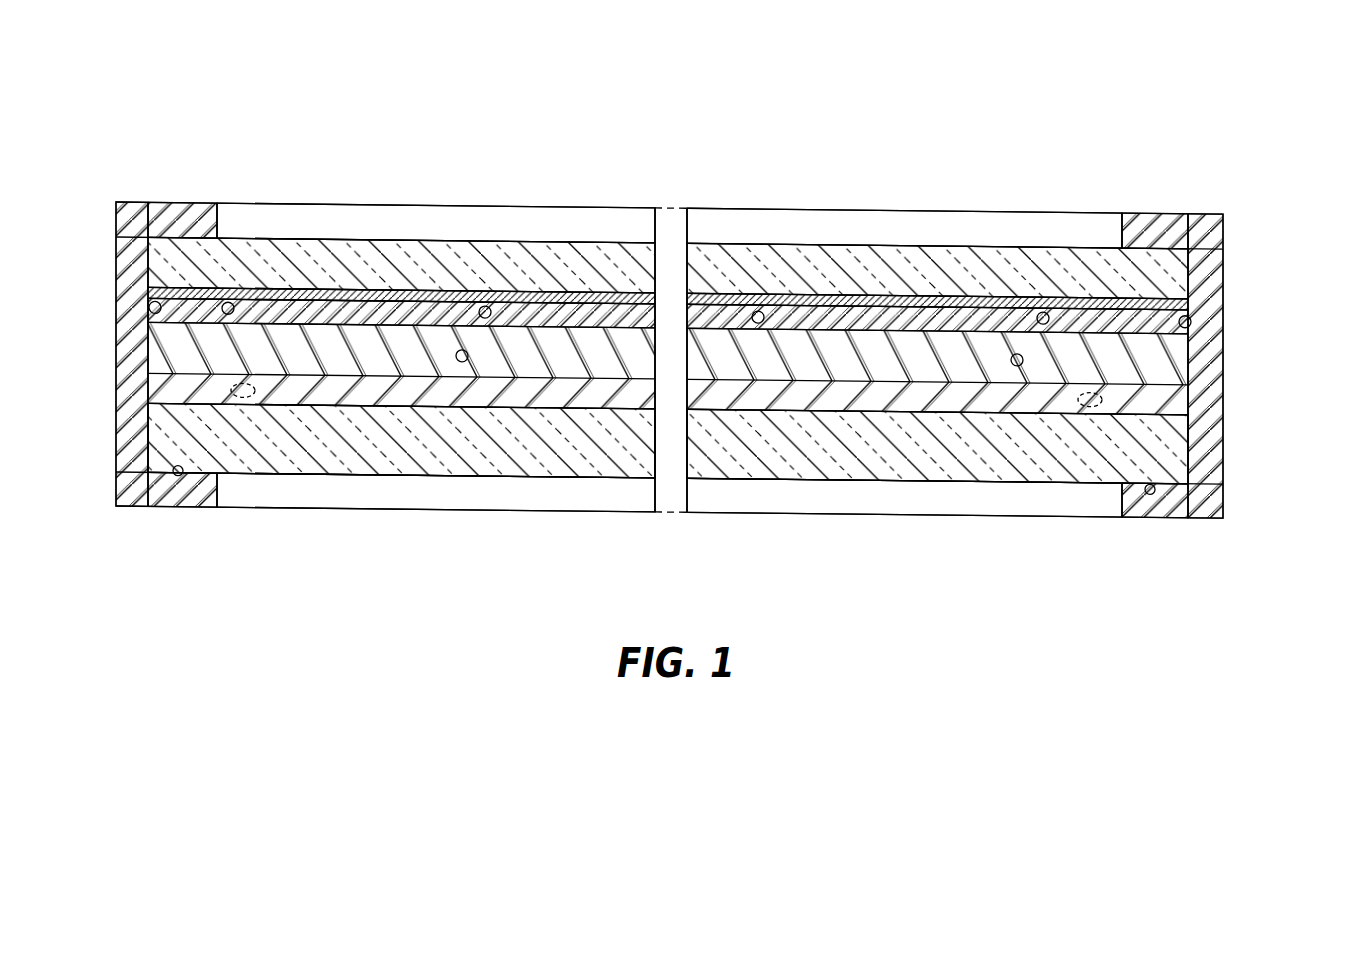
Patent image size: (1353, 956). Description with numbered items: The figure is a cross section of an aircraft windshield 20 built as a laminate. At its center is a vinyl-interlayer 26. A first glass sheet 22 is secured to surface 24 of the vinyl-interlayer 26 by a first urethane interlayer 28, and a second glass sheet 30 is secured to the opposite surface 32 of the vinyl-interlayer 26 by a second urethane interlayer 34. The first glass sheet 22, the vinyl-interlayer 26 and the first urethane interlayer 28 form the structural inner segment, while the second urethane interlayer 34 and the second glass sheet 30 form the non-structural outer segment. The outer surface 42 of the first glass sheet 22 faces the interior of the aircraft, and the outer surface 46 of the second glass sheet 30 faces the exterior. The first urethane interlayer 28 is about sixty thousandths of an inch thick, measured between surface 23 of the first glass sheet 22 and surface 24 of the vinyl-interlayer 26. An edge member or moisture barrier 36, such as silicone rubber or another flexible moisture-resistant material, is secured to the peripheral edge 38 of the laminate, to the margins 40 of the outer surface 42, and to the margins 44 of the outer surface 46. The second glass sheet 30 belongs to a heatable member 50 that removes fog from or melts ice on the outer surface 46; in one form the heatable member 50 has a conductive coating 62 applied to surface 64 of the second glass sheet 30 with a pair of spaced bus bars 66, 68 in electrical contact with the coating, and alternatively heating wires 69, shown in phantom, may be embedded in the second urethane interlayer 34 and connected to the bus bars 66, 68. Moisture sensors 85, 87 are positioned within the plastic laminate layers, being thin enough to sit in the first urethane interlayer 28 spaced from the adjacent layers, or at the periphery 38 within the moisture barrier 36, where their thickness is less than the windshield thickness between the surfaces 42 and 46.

The aircraft windshield 20 is at (292, 569).
The first glass sheet 22 is at (500, 452).
The surface of the first glass sheet 23 is at (604, 407).
The surface of the vinyl-interlayer 24 is at (268, 382).
The vinyl-interlayer 26 is at (368, 345).
The first urethane interlayer 28 is at (452, 407).
The second glass sheet 30 is at (563, 260).
The surface of the vinyl-interlayer 32 is at (458, 292).
The second urethane interlayer 34 is at (300, 310).
The edge member or moisture barrier 36 is at (118, 262).
The peripheral edge 38 is at (118, 437).
The margins of the outer surface 40 is at (160, 510).
The outer surface of the windshield 42 is at (390, 477).
The margins of the outer surface 44 is at (153, 212).
The outer surface of the windshield 46 is at (504, 245).
The heatable member 50 is at (592, 237).
The conductive coating 62 is at (330, 295).
The surface of the second glass sheet 64 is at (408, 290).
The bus bar 66 is at (196, 235).
The bus bar 68 is at (1186, 240).
The wires 69 is at (712, 245).
The moisture sensor 85 is at (226, 300).
The moisture sensor 87 is at (758, 304).